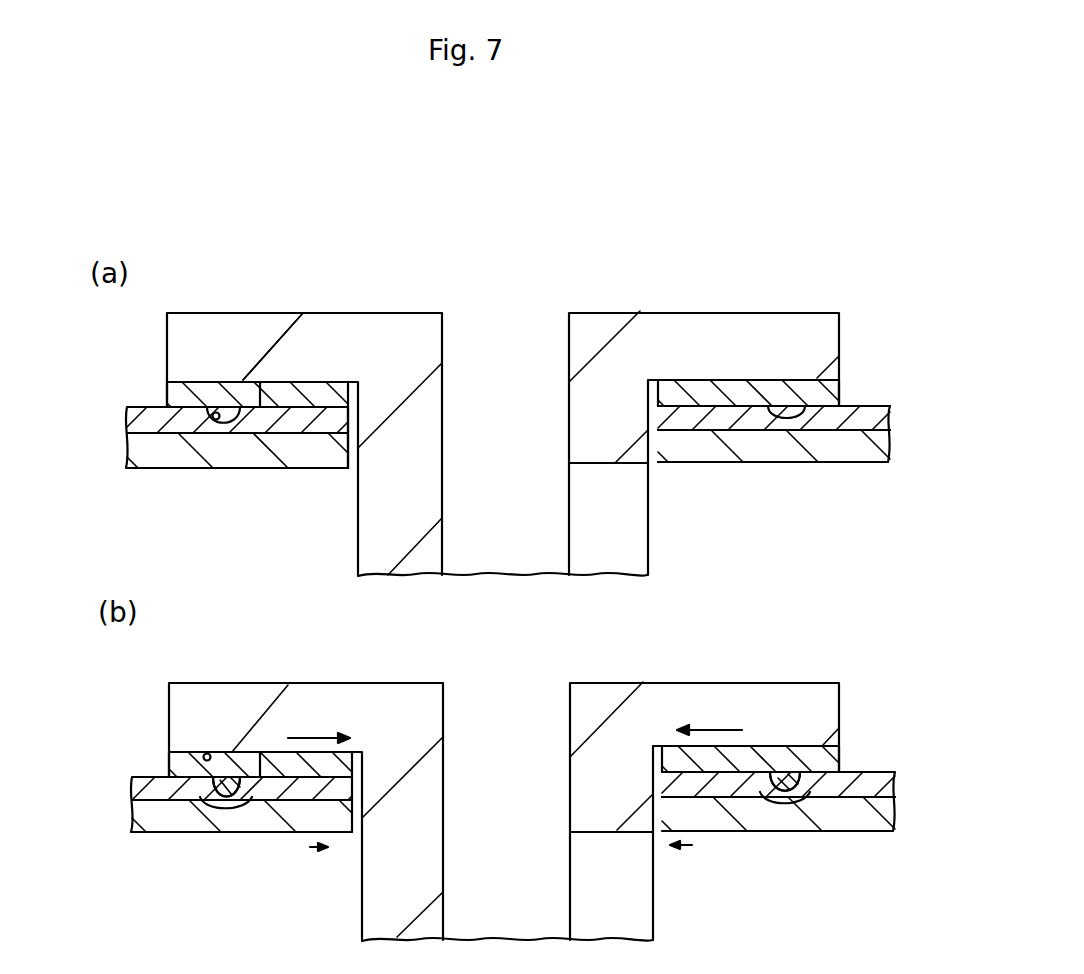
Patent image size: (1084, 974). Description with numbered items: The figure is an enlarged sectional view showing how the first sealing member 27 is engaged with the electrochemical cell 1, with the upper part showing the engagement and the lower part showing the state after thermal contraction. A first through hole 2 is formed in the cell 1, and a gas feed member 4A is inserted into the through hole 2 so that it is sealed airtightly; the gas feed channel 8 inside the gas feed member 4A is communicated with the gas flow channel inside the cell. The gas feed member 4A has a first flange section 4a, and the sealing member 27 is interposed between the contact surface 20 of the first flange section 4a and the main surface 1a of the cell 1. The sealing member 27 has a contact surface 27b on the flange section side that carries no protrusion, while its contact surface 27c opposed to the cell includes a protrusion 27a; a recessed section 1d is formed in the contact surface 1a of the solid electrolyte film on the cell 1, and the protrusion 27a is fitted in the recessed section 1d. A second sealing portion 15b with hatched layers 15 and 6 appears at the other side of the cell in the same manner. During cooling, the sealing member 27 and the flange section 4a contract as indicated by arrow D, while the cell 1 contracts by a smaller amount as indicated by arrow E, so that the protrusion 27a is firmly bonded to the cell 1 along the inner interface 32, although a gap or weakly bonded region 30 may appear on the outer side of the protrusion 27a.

The electrochemical cell 1 is at (872, 394).
The main surface of the cell 1a is at (148, 416).
The recessed section 1d is at (217, 427).
The first through hole 2 is at (355, 407).
The gas feed member 4A is at (414, 310).
The first flange section 4a is at (272, 330).
The lower plate 6 is at (320, 458).
The gas feed channel 8 is at (442, 345).
The plate layer 15 is at (285, 428).
The right insulating strip 15b is at (693, 403).
The contact surface of the first flange section 20 is at (302, 385).
The first sealing member 27 is at (183, 388).
The protrusion 27a is at (220, 408).
The contact surface on flange section side 27b is at (773, 378).
The contact surface opposed to the cell 27c is at (750, 408).
The gap or weakly bonded region 30 is at (190, 822).
The inner interface 32 is at (247, 815).
The arrow D is at (323, 735).
The arrow E is at (313, 847).